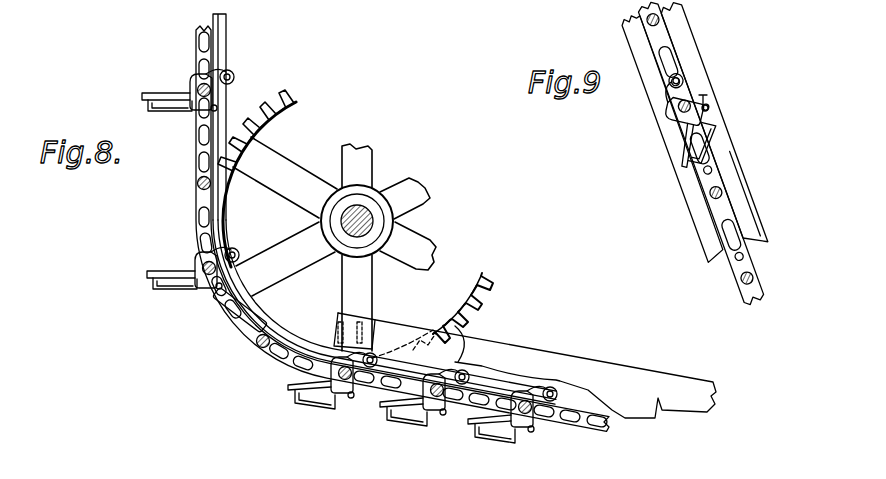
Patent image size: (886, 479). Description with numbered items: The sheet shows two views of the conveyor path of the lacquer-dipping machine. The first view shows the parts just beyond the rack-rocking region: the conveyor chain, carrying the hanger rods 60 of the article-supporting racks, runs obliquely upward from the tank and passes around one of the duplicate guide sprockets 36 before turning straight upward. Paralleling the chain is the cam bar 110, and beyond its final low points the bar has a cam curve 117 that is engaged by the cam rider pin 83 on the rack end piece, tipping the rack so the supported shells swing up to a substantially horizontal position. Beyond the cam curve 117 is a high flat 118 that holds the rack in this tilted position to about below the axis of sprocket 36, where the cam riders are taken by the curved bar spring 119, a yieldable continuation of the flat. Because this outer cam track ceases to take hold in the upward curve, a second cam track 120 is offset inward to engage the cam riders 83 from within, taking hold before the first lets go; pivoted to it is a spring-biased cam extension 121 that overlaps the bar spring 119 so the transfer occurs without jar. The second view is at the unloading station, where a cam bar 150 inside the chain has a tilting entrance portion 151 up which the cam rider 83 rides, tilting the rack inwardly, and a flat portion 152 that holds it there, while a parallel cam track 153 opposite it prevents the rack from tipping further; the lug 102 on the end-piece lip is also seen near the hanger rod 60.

In FIG. 8, the guide sprockets 36 is at (264, 118).
In FIG. 8, the hanger rod 60 is at (262, 348).
In FIG. 9, the hanger rod 60 is at (746, 281).
In FIG. 8, the cam rider pin 83 is at (239, 255).
In FIG. 9, the cam rider pin 83 is at (668, 83).
In FIG. 8, the cam bar 110 is at (563, 367).
In FIG. 8, the cam curve 117 is at (475, 336).
In FIG. 8, the high flat 118 is at (435, 332).
In FIG. 8, the curved bar spring 119 is at (275, 312).
In FIG. 8, the second cam track 120 is at (222, 190).
In FIG. 8, the cam extension 121 is at (253, 310).
In FIG. 9, the lug 102 is at (708, 106).
In FIG. 9, the cam bar 150 is at (723, 158).
In FIG. 9, the tilting entrance portion 151 is at (750, 228).
In FIG. 9, the flat portion 152 is at (667, 29).
In FIG. 9, the parallel cam track 153 is at (700, 207).